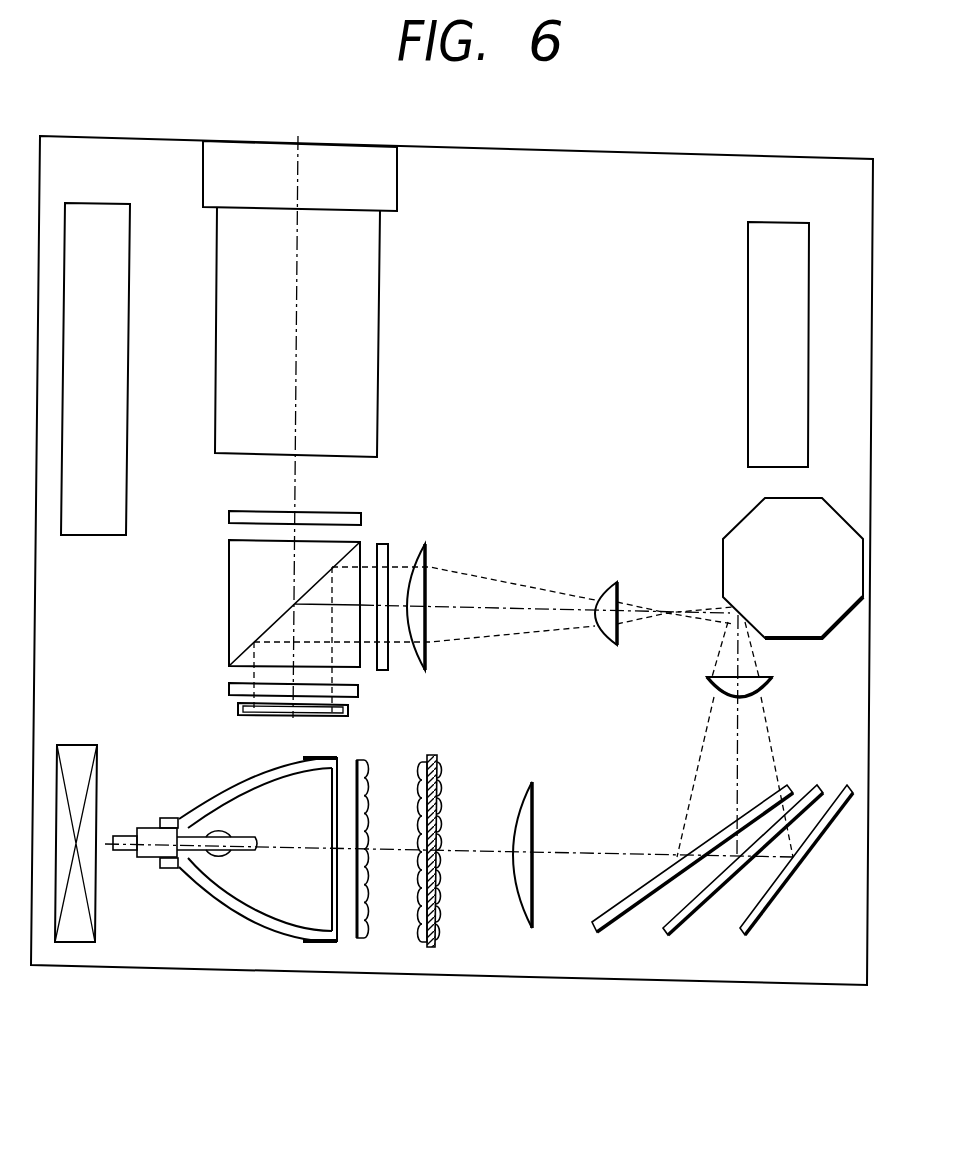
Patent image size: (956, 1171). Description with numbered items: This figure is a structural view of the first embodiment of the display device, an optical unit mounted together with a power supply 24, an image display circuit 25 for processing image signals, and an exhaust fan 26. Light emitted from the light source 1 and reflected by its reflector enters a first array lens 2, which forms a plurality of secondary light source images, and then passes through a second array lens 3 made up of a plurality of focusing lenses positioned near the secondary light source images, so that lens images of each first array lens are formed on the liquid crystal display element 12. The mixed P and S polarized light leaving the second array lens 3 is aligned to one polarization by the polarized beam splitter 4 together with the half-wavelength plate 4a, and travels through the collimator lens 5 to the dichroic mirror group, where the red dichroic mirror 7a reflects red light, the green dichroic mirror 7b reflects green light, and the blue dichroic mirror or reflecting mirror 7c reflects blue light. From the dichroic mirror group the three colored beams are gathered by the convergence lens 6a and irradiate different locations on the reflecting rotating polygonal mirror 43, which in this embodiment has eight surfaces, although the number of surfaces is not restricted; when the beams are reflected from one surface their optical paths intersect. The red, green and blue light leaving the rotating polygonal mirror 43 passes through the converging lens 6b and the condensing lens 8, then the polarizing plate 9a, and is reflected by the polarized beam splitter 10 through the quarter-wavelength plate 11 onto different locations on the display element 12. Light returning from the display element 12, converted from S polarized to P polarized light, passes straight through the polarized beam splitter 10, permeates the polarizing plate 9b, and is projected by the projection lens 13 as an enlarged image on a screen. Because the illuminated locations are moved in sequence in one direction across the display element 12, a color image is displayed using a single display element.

The light source 1 is at (250, 927).
The first array lens 2 is at (368, 943).
The second array lens 3 is at (420, 942).
The polarized beam splitter 4 is at (433, 948).
The λ/2 wavelength plate 4a is at (442, 940).
The collimator lens 5 is at (530, 932).
The convergence lens 6a is at (772, 680).
The converging lens 6b is at (612, 582).
The red dichroic mirror 7a is at (613, 920).
The green dichroic mirror 7b is at (682, 925).
The B dichroic mirror or reflecting mirror 7c is at (760, 920).
The condensing lens 8 is at (423, 543).
The polarizing plate 9a is at (383, 543).
The polarizing plate 9b is at (229, 513).
The PBS 10 is at (229, 588).
The λ/4 wavelength plate 11 is at (229, 686).
The liquid crystal display element 12 is at (238, 707).
The projection lens 13 is at (373, 263).
The power supply 24 is at (100, 204).
The image display circuit 25 is at (750, 286).
The exhaust fan 26 is at (78, 747).
The reflecting rotating polygonal mirror 43 is at (752, 517).